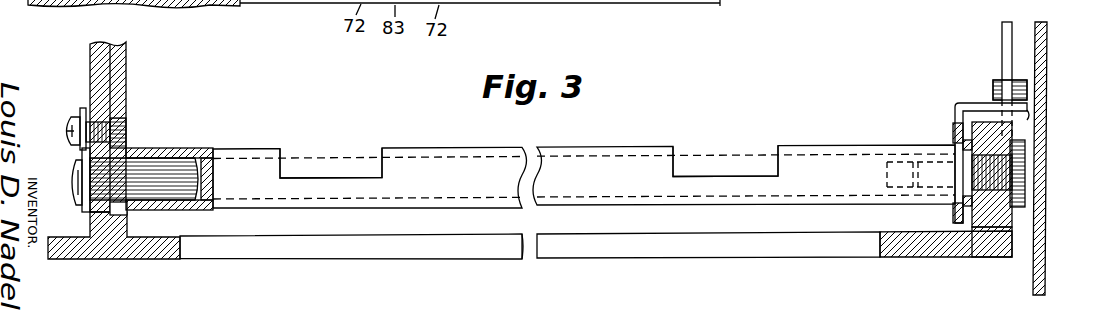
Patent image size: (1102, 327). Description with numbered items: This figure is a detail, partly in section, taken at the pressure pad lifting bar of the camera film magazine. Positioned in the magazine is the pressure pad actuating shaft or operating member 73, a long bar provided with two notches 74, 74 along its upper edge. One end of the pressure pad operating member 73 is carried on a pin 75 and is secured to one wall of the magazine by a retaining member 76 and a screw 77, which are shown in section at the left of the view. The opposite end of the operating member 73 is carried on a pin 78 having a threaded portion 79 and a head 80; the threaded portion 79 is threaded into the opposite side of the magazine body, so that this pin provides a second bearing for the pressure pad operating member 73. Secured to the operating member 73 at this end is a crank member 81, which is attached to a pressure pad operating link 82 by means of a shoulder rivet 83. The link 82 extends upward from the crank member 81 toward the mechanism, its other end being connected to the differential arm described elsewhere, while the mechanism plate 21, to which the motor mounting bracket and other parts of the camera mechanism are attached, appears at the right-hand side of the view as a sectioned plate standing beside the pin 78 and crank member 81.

The mechanism plate 21 is at (1046, 38).
The pressure pad actuating shaft 73 is at (584, 160).
The notches 74 is at (334, 170).
The pin 75 is at (164, 170).
The retaining member 76 is at (81, 151).
The screw 77 is at (70, 123).
The pin 78 is at (937, 160).
The threaded portion 79 is at (1008, 165).
The head 80 is at (1018, 194).
The crank member 81 is at (958, 106).
The pressure pad operating link 82 is at (1002, 40).
The shoulder rivet 83 is at (996, 82).